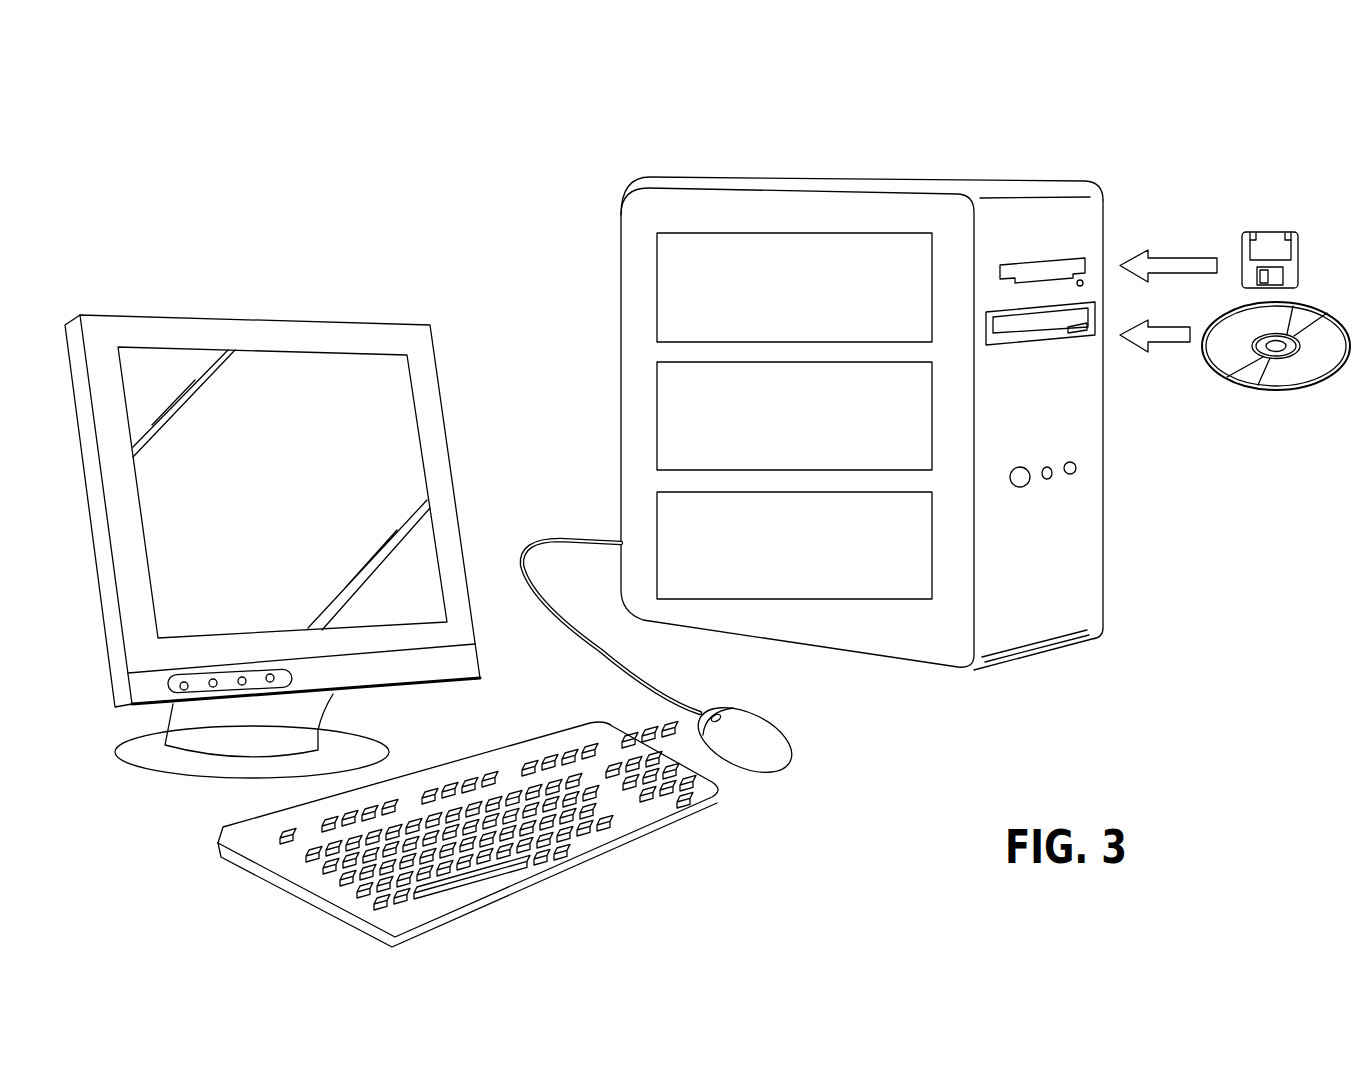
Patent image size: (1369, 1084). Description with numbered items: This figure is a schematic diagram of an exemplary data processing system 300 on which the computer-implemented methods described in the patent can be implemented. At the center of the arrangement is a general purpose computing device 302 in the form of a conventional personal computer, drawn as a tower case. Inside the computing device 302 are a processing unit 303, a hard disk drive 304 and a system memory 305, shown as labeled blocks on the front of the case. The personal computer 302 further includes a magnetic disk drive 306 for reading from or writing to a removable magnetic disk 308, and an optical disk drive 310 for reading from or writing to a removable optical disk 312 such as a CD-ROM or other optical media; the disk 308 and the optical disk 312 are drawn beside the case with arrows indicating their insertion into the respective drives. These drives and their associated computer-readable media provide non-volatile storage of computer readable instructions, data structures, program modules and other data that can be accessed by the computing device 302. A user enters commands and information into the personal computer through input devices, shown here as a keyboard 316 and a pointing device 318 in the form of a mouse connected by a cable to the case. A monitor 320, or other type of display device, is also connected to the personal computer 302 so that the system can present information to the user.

The data processing system 300 is at (284, 113).
The general purpose computing device 302 is at (862, 183).
The processing unit 303 is at (776, 314).
The hard disk drive 304 is at (776, 443).
The system memory 305 is at (776, 573).
The magnetic disk drive 306 is at (1065, 265).
The removable magnetic disk 308 is at (1272, 240).
The optical disk drive 310 is at (1052, 332).
The removable optical disk 312 is at (1287, 388).
The keyboard 316 is at (563, 858).
The pointing device 318 is at (778, 747).
The monitor 320 is at (273, 337).